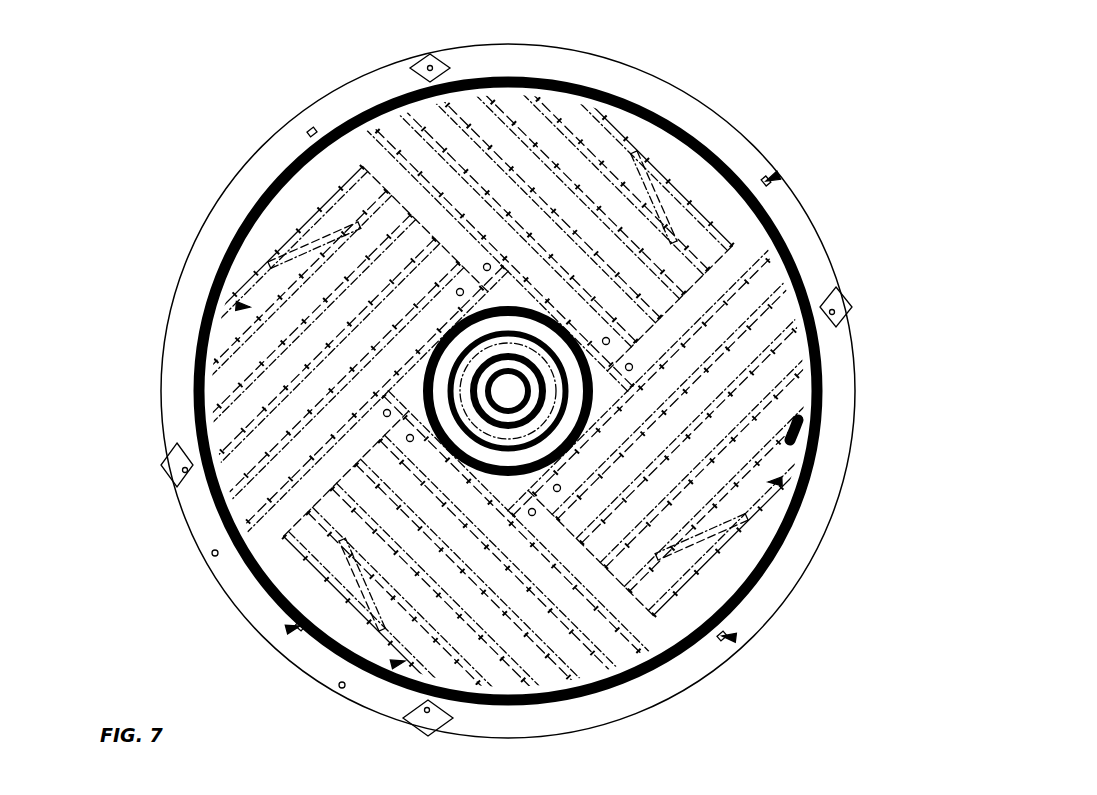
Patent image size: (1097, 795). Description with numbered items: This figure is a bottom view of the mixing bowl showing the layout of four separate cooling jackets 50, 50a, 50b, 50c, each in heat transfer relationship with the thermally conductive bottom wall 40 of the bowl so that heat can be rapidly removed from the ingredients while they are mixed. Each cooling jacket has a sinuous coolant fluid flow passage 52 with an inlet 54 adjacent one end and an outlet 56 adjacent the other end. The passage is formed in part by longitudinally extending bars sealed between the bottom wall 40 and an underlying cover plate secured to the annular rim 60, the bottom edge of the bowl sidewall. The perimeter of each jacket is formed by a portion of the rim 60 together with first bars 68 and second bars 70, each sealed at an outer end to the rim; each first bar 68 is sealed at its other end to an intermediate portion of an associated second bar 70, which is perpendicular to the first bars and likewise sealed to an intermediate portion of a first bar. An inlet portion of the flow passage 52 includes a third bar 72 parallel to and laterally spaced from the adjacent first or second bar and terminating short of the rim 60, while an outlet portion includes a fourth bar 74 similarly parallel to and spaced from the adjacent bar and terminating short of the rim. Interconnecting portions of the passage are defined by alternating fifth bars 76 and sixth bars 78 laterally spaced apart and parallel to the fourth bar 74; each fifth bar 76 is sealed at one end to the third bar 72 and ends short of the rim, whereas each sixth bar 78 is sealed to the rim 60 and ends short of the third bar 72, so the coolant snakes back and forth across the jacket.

The bottom wall 40 is at (300, 148).
The cooling jacket 50 is at (730, 637).
The cooling jacket 50a is at (292, 628).
The cooling jacket 50b is at (312, 135).
The cooling jacket 50c is at (770, 179).
The sinuous coolant fluid flow passage 52 is at (612, 125).
The inlet 54 is at (490, 266).
The outlet 56 is at (457, 289).
The rim 60 is at (800, 425).
The first bar 68 is at (378, 128).
The second bar 70 is at (215, 520).
The third bar 72 is at (307, 175).
The fourth bar 74 is at (425, 62).
The fifth bar 76 is at (508, 125).
The sixth bar 78 is at (463, 125).